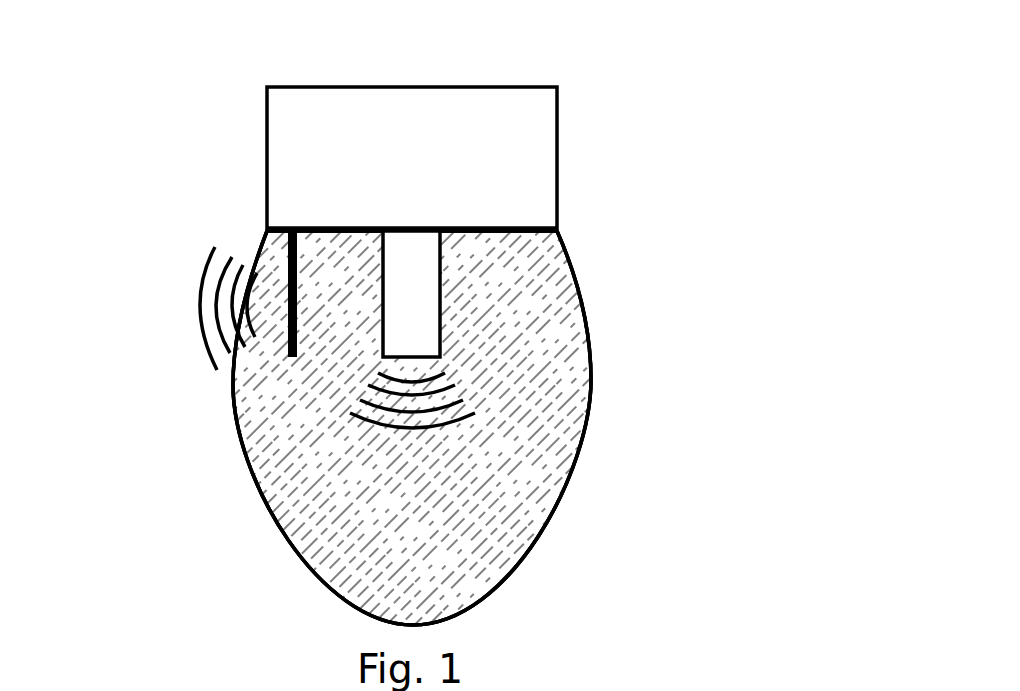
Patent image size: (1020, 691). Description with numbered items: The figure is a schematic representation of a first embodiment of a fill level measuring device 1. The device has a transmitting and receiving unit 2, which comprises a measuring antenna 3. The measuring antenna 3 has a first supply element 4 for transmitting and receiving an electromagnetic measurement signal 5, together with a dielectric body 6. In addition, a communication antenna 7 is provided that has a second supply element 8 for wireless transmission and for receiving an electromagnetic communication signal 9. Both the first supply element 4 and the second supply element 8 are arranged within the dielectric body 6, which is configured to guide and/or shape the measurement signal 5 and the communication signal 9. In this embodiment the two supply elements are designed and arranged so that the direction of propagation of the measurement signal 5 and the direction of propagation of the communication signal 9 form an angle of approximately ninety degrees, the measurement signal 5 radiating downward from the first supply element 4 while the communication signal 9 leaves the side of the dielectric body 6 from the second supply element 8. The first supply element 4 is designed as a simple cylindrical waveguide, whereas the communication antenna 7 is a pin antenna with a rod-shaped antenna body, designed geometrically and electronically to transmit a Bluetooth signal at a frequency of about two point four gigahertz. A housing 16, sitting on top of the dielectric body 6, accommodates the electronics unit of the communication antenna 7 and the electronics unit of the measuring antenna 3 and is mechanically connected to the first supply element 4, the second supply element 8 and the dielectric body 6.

The fill level measuring device 1 is at (122, 107).
The transmitting and receiving unit 2 is at (610, 253).
The measuring antenna 3 is at (658, 390).
The first supply element 4 is at (433, 327).
The electromagnetic measurement signal 5 is at (473, 438).
The dielectric body 6 is at (580, 460).
The communication antenna 7 is at (247, 237).
The second supply element 8 is at (292, 357).
The electromagnetic communication signal 9 is at (190, 383).
The housing 16 is at (508, 105).